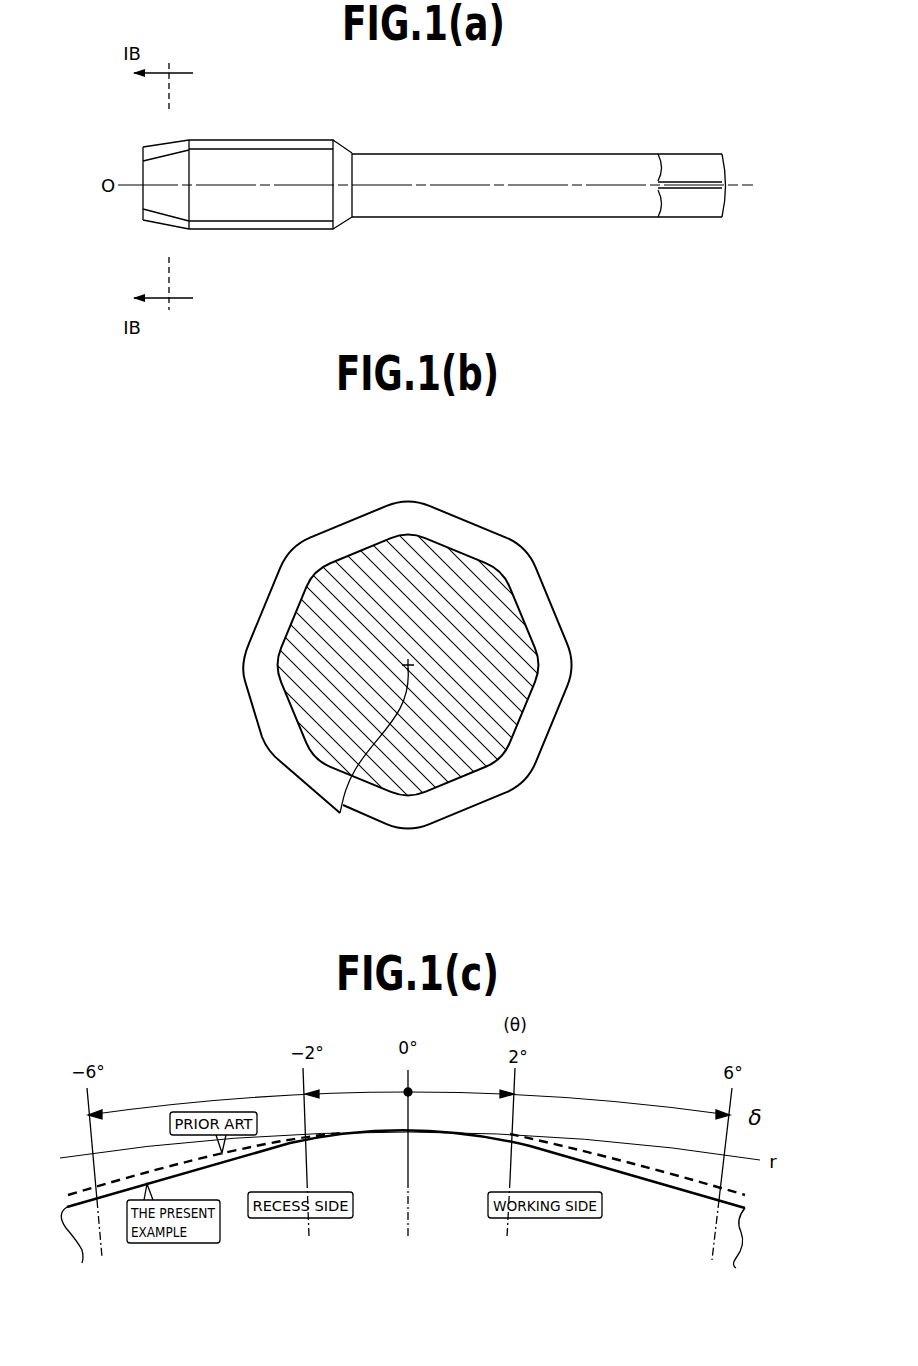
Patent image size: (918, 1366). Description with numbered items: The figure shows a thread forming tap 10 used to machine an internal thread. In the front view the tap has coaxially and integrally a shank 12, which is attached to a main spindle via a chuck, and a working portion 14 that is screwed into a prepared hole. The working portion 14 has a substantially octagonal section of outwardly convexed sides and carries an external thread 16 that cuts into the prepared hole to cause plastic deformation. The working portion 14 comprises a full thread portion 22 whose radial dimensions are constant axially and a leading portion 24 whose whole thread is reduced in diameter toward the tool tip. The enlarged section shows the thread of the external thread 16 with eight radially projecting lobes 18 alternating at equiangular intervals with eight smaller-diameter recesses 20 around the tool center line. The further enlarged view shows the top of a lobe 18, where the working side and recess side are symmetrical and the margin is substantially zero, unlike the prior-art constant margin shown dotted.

In FIG. 1A, the thread forming tap 10 is at (646, 114).
In FIG. 1A, the shank 12 is at (507, 167).
In FIG. 1A, the working portion 14 is at (140, 117).
In FIG. 1B, the working portion 14 is at (537, 480).
In FIG. 1B, the external thread 16 is at (468, 529).
In FIG. 1B, the lobe 18 is at (413, 490).
In FIG. 1C, the lobe 18 is at (599, 1069).
In FIG. 1B, the recess 20 is at (347, 512).
In FIG. 1A, the full thread portion 22 is at (262, 145).
In FIG. 1A, the leading portion 24 is at (167, 220).